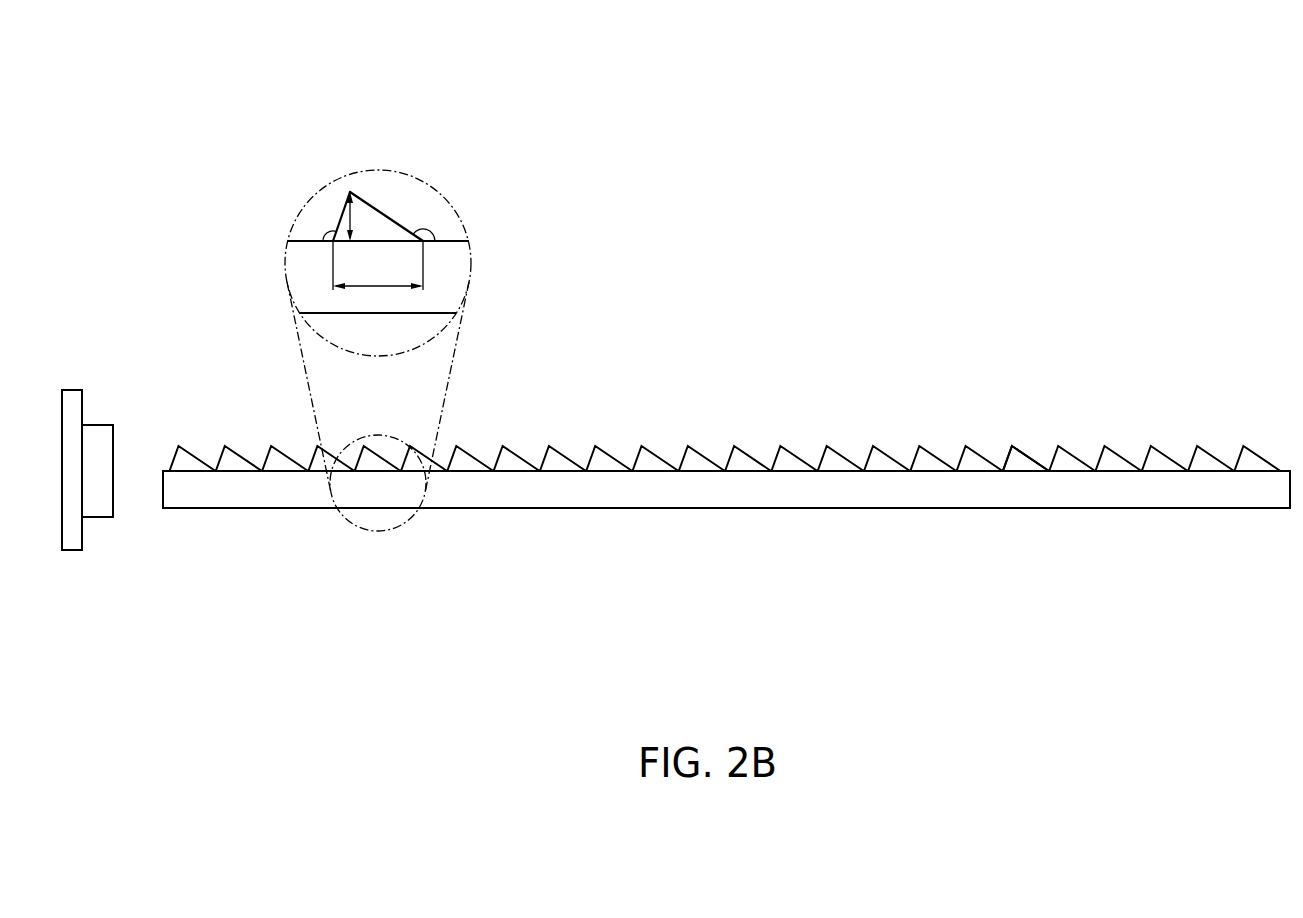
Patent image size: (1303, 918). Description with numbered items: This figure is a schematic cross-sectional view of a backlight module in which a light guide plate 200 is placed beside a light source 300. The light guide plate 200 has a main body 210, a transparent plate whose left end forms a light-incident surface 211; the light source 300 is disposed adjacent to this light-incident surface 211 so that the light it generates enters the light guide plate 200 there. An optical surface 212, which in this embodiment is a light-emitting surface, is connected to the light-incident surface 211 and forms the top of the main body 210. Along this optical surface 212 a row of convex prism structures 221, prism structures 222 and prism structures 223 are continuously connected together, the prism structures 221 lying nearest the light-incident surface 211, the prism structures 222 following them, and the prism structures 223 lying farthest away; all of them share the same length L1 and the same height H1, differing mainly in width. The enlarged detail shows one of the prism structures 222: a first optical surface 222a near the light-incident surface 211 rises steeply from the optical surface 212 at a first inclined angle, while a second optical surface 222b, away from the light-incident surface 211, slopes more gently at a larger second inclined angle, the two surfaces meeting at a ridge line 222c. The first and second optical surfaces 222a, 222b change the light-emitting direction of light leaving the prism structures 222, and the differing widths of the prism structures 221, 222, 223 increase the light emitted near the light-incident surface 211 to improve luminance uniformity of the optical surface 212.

The light source 300 is at (74, 398).
The light guide plate 200 is at (702, 459).
The main body 210 is at (985, 490).
The light-incident surface 211 is at (162, 490).
The optical surface 212 is at (560, 470).
The prism structures 221 is at (232, 456).
The prism structures 222 is at (374, 142).
The first optical surface 222a is at (338, 228).
The second optical surface 222b is at (393, 220).
The ridge line 222c is at (342, 216).
The prism structures 223 is at (1020, 462).
The height H1 is at (348, 224).
The length L1 is at (378, 265).